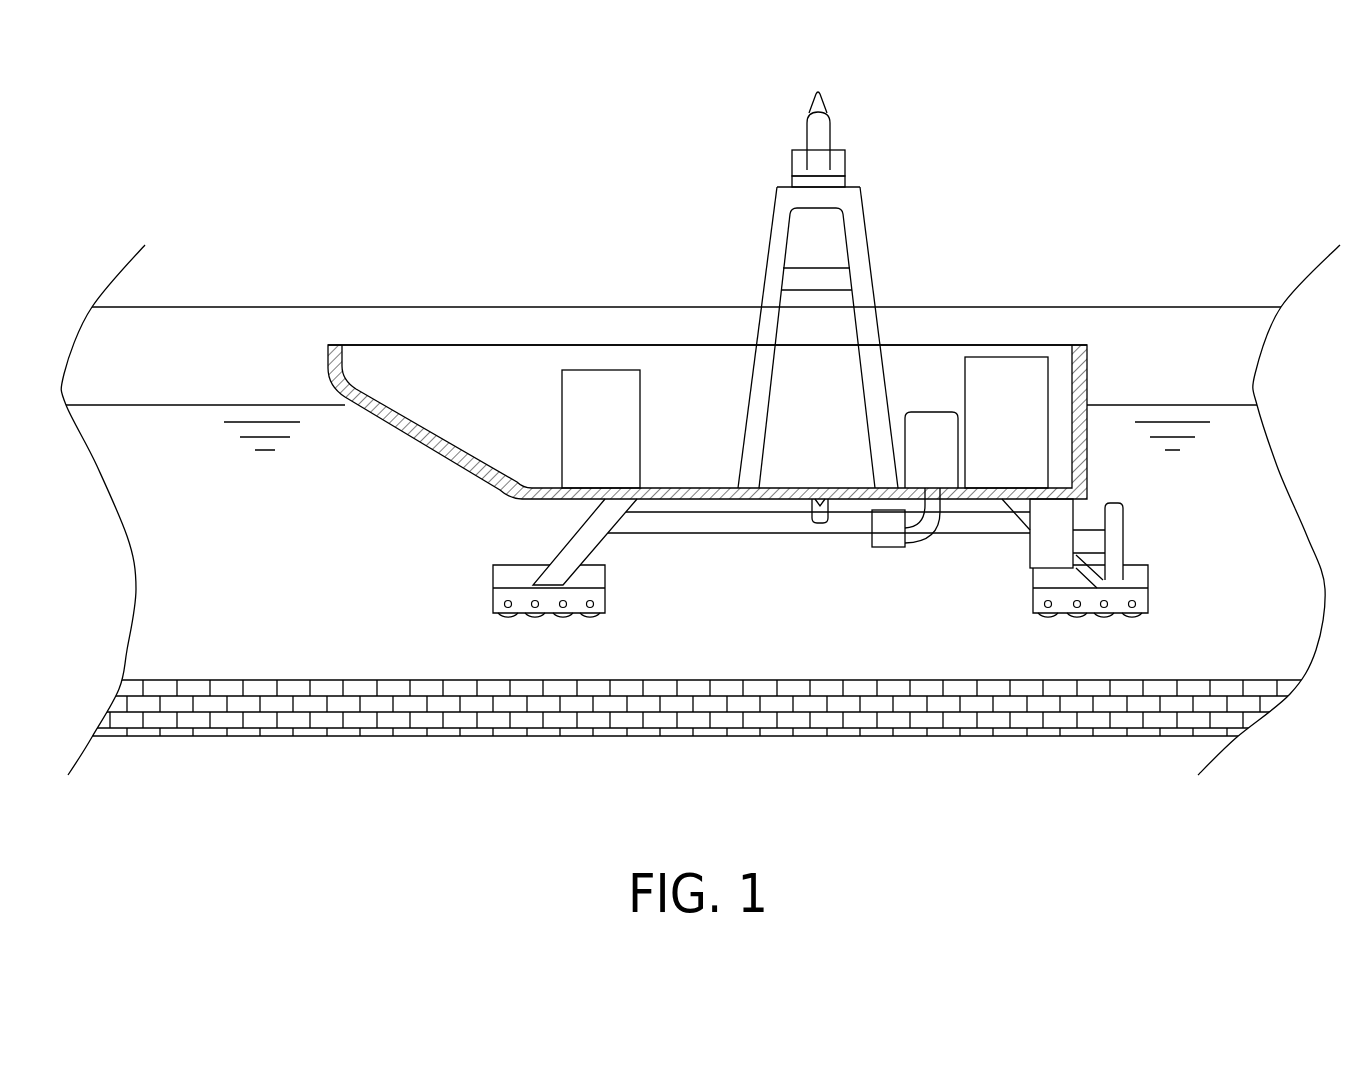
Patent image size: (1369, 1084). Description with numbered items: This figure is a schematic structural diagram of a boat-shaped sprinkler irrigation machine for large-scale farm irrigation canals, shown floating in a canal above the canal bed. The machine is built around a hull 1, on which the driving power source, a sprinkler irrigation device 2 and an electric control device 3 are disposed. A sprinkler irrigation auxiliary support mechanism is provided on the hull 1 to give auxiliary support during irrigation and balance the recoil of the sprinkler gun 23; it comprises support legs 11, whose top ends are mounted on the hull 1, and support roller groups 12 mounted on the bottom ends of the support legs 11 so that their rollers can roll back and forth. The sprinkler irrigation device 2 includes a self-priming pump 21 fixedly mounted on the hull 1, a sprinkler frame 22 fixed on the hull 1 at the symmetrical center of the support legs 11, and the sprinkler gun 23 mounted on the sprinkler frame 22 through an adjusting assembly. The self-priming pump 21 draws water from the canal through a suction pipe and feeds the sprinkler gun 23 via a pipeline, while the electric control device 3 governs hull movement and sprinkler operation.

The hull 1 is at (447, 380).
The sprinkler irrigation device 2 is at (816, 290).
The electric control device 3 is at (583, 380).
The support legs 11 is at (597, 528).
The support roller groups 12 is at (548, 597).
The self-priming pump 21 is at (930, 453).
The sprinkler frame 22 is at (770, 292).
The sprinkler gun 23 is at (813, 130).